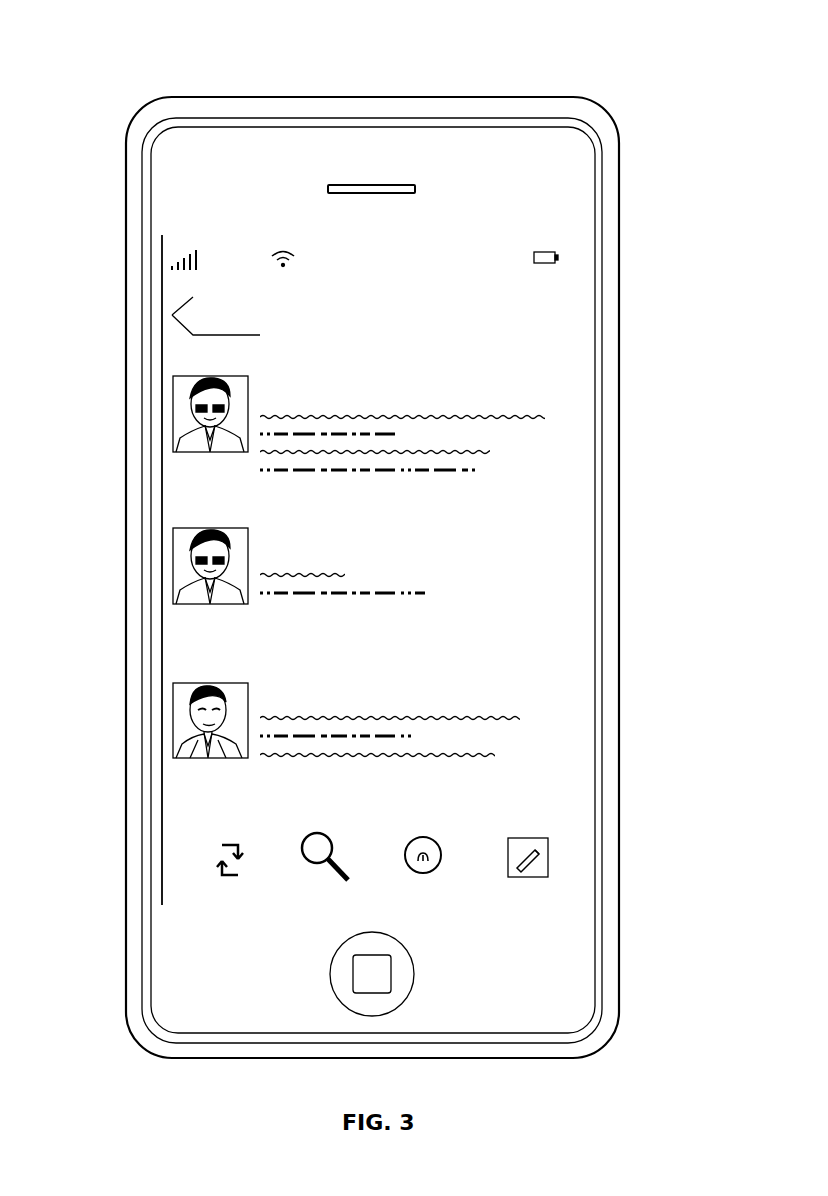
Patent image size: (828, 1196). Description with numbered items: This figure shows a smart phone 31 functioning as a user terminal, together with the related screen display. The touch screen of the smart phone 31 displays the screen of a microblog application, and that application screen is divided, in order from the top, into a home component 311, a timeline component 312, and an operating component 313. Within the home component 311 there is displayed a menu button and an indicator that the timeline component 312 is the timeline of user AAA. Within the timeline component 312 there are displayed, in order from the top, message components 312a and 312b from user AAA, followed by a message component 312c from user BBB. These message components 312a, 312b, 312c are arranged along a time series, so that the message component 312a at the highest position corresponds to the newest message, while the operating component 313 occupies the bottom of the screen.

The smart phone 31 is at (264, 54).
The home component 311 is at (634, 248).
The timeline component 312 is at (634, 823).
The message component 312a is at (119, 359).
The message component 312b is at (119, 509).
The message component 312c is at (119, 657).
The operating component 313 is at (634, 835).